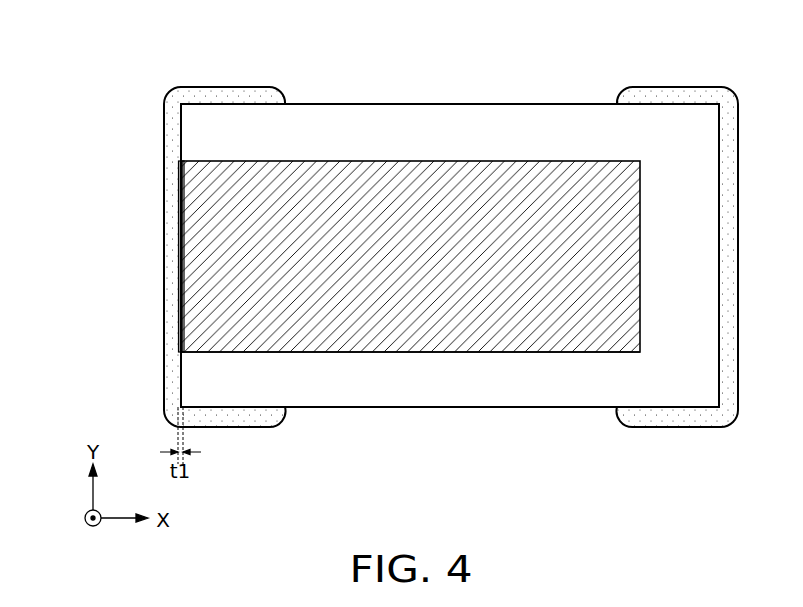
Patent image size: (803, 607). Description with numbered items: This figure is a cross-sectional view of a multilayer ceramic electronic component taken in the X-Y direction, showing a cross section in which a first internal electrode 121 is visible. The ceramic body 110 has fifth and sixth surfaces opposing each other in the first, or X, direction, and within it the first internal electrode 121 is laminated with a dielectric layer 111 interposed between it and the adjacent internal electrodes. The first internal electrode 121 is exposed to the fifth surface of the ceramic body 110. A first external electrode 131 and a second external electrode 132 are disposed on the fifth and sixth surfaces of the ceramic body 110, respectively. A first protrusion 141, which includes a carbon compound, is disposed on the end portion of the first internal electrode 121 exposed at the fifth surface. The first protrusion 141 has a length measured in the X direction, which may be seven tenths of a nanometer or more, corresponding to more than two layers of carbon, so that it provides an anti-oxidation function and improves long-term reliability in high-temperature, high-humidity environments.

The ceramic body 110 is at (455, 104).
The dielectric layer 111 is at (517, 390).
The first internal electrode 121 is at (393, 333).
The first external electrode 131 is at (223, 90).
The second external electrode 132 is at (679, 90).
The first protrusion 141 is at (181, 252).